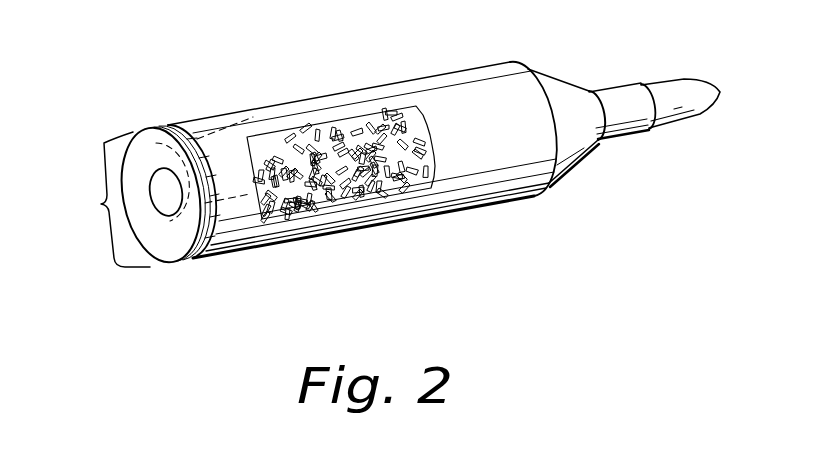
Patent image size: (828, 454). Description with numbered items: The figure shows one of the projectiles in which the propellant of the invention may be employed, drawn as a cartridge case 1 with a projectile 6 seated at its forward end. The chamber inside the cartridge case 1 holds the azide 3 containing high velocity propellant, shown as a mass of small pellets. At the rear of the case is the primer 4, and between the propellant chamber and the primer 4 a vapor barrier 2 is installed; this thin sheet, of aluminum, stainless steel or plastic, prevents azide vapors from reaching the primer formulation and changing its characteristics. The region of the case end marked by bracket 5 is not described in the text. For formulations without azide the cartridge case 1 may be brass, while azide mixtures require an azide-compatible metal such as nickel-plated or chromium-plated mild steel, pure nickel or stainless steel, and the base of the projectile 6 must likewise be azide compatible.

The cartridge case 1 is at (499, 218).
The vapor barrier 2 is at (136, 130).
The azide containing high velocity propellant 3 is at (363, 143).
The primer 4 is at (163, 207).
The cap length 5 is at (115, 199).
The projectile 6 is at (686, 124).